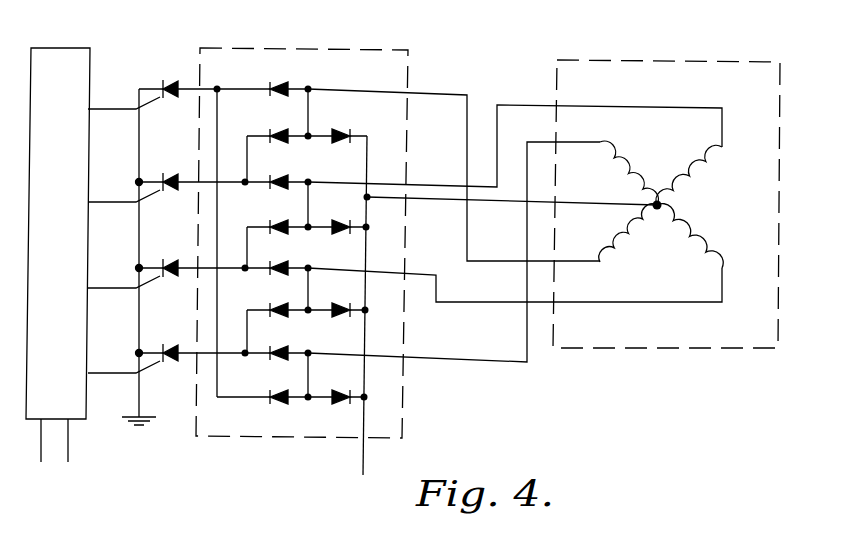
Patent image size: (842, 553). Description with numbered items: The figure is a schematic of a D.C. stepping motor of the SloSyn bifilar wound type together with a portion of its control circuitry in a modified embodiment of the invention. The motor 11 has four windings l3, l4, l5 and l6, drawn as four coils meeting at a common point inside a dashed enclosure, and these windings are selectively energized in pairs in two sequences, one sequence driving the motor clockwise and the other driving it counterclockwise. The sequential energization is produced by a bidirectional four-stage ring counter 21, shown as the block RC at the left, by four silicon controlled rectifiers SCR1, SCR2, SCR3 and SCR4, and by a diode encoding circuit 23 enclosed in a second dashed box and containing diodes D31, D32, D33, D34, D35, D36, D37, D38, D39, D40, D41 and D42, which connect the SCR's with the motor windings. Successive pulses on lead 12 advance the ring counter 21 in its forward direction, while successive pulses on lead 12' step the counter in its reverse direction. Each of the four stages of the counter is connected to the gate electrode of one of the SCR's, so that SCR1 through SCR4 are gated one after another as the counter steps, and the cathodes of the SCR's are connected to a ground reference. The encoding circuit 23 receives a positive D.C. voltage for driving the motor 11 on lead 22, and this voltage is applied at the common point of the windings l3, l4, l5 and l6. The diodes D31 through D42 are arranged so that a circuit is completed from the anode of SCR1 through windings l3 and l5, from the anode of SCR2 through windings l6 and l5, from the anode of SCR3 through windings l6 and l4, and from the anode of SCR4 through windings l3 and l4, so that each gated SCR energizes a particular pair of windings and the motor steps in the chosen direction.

The motor 11 is at (573, 60).
The lead 12 is at (28, 460).
The lead 12' is at (80, 460).
The bidirectional four-stage ring counter 21 is at (57, 48).
The lead 22 is at (361, 470).
The diode encoding circuit 23 is at (315, 49).
The SCR SCR1 is at (178, 79).
The SCR SCR2 is at (192, 171).
The SCR SCR3 is at (192, 257).
The SCR SCR4 is at (192, 342).
The diode D31 is at (277, 78).
The diode D32 is at (275, 124).
The diode D33 is at (275, 170).
The diode D34 is at (272, 215).
The diode D35 is at (272, 257).
The diode D36 is at (272, 299).
The diode D37 is at (272, 342).
The diode D38 is at (272, 385).
The diode D39 is at (342, 124).
The diode D40 is at (337, 215).
The diode D41 is at (337, 299).
The diode D42 is at (337, 385).
The winding l3 is at (627, 173).
The winding l4 is at (690, 236).
The winding l5 is at (626, 233).
The winding l6 is at (689, 175).